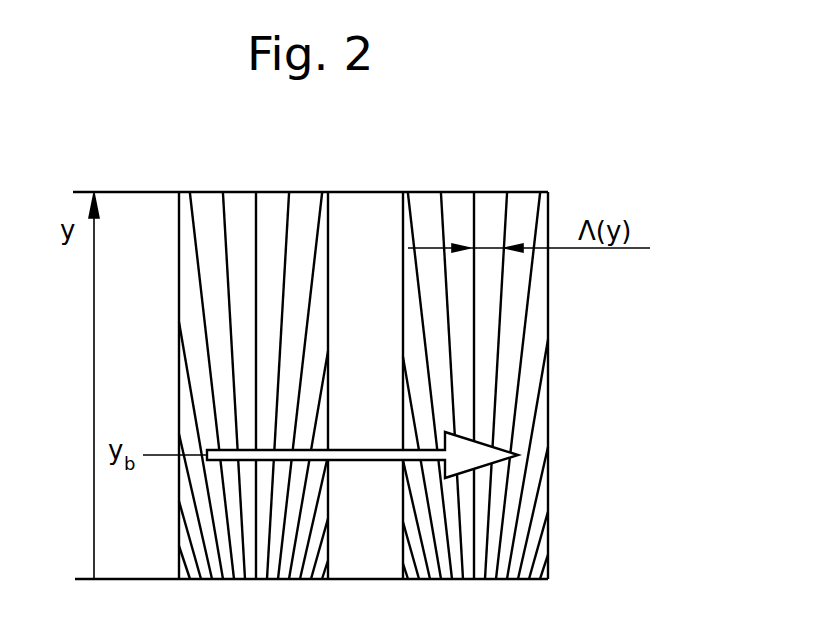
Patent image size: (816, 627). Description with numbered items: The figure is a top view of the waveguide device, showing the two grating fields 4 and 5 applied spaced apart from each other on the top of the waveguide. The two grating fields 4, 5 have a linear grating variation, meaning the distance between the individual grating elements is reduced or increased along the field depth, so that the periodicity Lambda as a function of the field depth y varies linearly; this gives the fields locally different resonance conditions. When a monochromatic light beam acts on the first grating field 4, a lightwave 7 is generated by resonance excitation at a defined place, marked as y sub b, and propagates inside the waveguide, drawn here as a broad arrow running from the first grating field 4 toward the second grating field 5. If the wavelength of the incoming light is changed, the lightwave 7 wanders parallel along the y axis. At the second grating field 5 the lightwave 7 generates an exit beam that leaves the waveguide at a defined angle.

The grating field 4 is at (244, 205).
The grating field 5 is at (473, 196).
The lightwave 7 is at (364, 449).